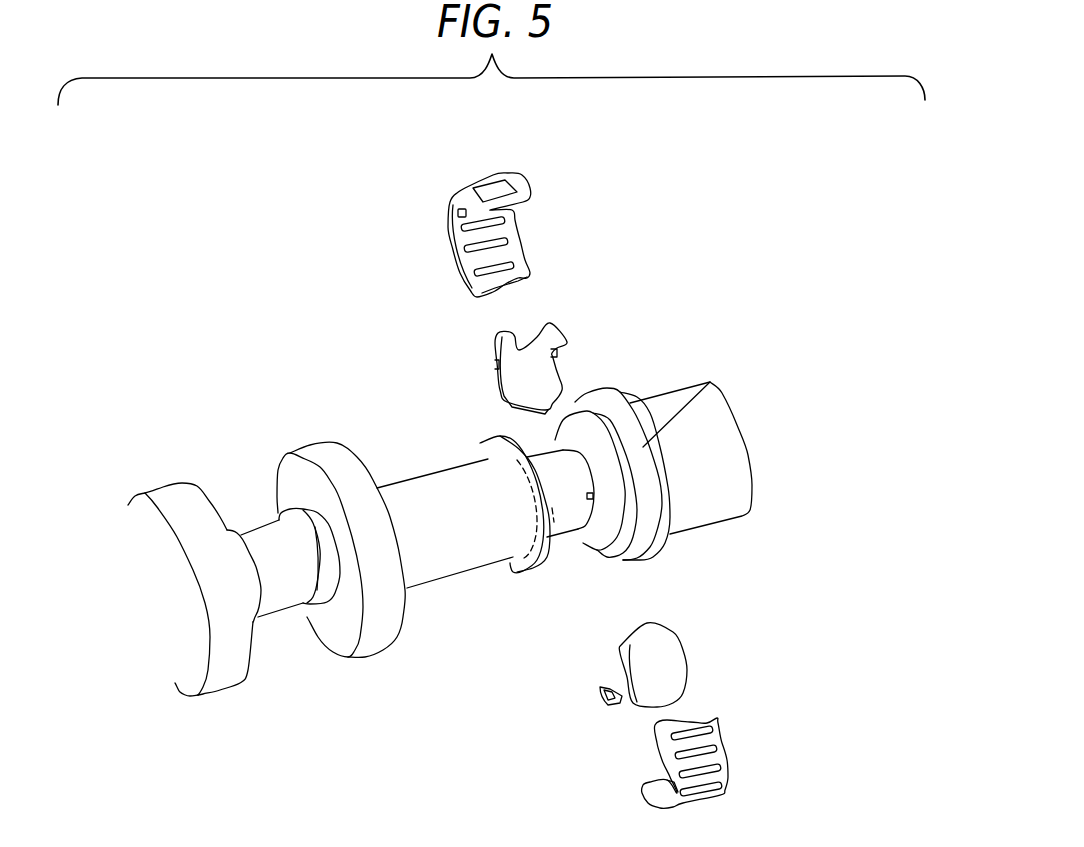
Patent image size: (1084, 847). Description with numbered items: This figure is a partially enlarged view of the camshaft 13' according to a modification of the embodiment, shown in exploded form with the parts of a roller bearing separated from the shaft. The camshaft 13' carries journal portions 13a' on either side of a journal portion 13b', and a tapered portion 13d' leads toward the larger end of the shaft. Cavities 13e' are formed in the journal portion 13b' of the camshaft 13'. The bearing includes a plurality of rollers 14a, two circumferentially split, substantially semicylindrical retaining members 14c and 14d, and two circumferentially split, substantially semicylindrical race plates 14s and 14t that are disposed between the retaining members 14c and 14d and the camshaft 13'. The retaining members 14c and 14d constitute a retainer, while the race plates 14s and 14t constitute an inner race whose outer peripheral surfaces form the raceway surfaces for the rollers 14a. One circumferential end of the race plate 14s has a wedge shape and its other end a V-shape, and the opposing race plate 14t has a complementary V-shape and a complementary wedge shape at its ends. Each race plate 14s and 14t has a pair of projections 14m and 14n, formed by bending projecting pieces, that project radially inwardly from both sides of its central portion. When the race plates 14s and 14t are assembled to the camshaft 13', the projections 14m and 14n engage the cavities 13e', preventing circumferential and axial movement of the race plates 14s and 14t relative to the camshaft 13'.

The camshaft 13' is at (604, 485).
The journal portion 13a' is at (266, 524).
The journal portion 13b' is at (558, 542).
The tapered portion 13d' is at (705, 377).
The cavities 13e' is at (581, 535).
The rollers 14a is at (508, 238).
The retaining member 14c is at (722, 738).
The retaining member 14d is at (520, 182).
The projection 14m is at (497, 363).
The projection 14n is at (605, 700).
The race plate 14s is at (555, 325).
The race plate 14t is at (668, 648).